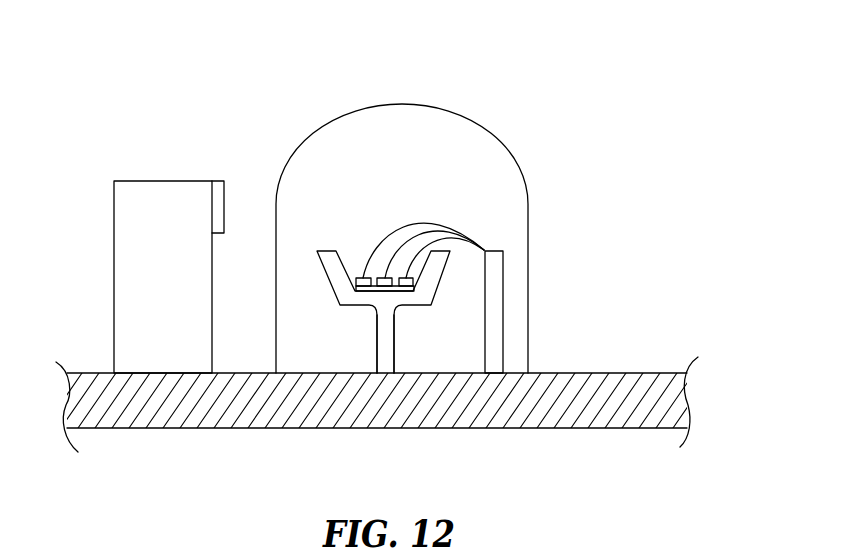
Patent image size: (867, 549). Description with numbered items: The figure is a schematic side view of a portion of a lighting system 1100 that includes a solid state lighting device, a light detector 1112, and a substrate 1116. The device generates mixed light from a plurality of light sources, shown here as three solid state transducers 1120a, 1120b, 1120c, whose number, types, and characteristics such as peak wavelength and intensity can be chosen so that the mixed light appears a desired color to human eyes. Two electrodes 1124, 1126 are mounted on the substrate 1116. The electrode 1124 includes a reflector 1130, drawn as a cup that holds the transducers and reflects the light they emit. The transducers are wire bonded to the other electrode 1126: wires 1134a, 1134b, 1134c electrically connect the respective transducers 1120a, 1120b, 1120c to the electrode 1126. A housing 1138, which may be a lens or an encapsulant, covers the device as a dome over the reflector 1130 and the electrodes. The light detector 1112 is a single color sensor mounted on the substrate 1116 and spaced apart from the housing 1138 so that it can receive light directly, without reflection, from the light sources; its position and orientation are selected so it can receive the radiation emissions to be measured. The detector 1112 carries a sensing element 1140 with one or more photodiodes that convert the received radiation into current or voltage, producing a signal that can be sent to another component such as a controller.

The light emitting device 1100 is at (702, 106).
The light detector 1112 is at (118, 181).
The substrate 1116 is at (635, 372).
The SST 1120a is at (362, 278).
The SST 1120b is at (385, 278).
The SST 1120c is at (406, 278).
The electrode 1124 is at (377, 328).
The electrode 1126 is at (485, 328).
The reflector 1130 is at (325, 251).
The wire 1134a is at (422, 224).
The wire 1134b is at (437, 232).
The wire 1134c is at (462, 240).
The housing 1138 is at (528, 357).
The sensing element 1140 is at (218, 181).